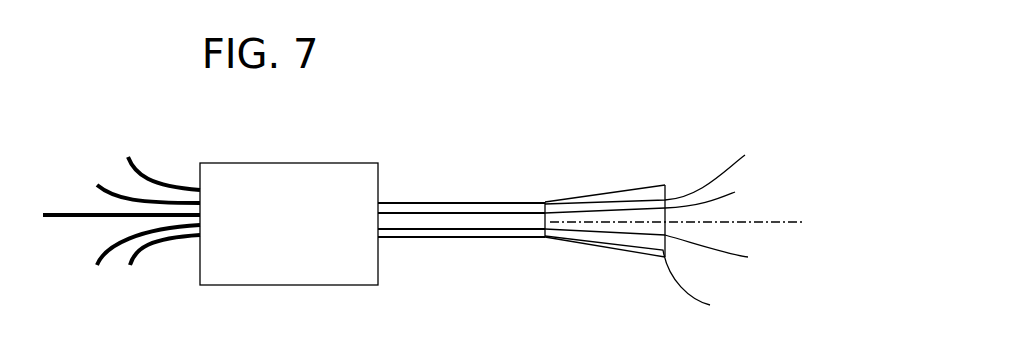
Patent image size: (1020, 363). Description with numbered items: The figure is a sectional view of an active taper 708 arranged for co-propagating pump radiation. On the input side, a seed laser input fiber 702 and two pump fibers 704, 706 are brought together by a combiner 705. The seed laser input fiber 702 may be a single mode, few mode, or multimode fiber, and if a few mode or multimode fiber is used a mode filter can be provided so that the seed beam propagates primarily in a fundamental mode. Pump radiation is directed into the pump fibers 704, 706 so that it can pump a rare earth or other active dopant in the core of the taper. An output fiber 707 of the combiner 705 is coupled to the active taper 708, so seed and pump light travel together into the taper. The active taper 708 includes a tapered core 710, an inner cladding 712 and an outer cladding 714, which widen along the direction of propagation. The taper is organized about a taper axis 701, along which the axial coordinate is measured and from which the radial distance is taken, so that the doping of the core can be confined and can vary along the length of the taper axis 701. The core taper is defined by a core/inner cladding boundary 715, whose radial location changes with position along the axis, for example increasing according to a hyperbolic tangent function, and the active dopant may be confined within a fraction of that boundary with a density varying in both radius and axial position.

The taper axis 701 is at (785, 222).
The seed laser input fiber 702 is at (90, 217).
The pump fiber 704 is at (133, 267).
The combiner 705 is at (306, 276).
The pump fiber 706 is at (133, 157).
The output fiber 707 is at (458, 235).
The active taper 708 is at (667, 157).
The tapered core 710 is at (669, 247).
The inner cladding 712 is at (669, 170).
The outer cladding 714 is at (648, 276).
The core/inner cladding boundary 715 is at (664, 192).